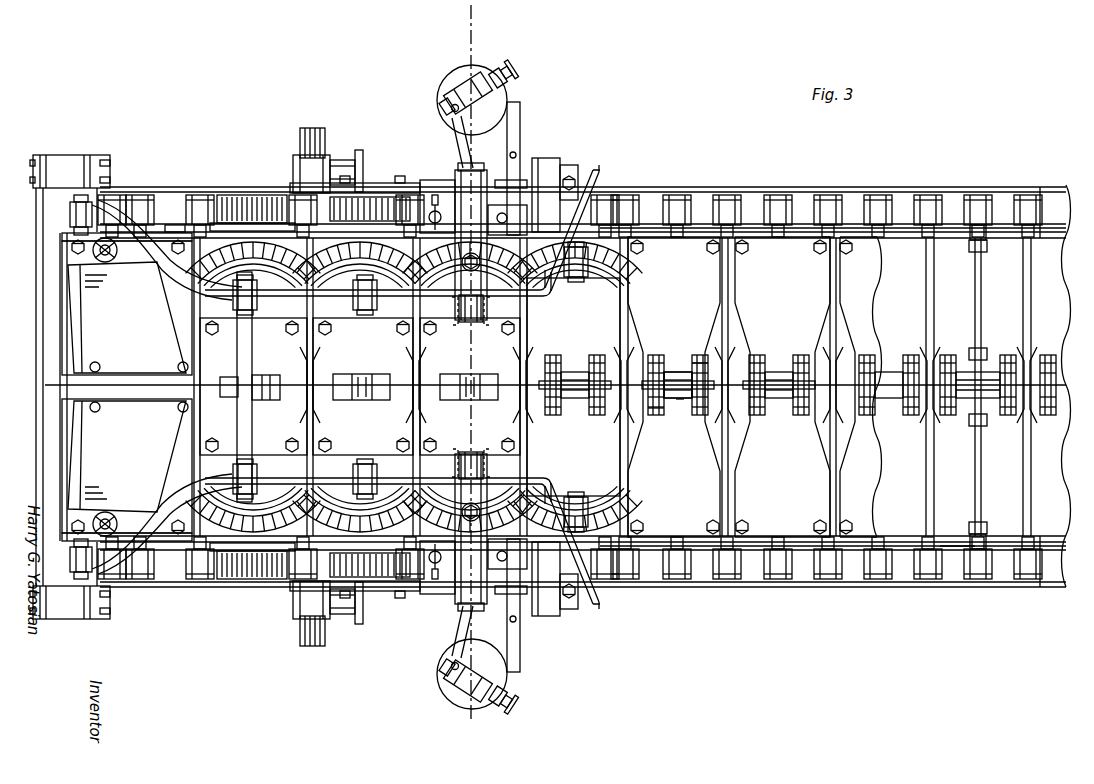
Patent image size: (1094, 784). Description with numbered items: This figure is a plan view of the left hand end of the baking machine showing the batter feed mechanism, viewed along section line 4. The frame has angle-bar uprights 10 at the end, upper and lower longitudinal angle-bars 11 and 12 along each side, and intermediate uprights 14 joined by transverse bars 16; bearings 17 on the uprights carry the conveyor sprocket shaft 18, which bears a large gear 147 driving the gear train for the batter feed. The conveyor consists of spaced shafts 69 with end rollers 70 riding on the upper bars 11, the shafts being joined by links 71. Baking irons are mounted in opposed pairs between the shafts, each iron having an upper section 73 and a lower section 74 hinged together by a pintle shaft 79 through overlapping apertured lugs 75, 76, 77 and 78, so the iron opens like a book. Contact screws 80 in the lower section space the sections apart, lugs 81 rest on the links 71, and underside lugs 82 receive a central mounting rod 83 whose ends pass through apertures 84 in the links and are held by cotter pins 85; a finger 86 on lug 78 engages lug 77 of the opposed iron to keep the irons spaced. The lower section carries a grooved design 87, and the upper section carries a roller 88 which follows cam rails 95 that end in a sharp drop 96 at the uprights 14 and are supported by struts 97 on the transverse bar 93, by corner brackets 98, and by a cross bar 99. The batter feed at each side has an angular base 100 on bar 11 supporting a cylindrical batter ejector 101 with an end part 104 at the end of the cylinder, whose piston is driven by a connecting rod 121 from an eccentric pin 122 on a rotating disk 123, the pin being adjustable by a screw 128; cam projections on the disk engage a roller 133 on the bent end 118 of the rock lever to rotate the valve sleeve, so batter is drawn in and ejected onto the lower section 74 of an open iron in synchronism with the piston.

The section line 4 is at (467, 16).
The angle-bar upright 10 is at (360, 165).
The upper horizontal angle-bar 11 is at (851, 200).
The lower horizontal angle-bar 12 is at (1002, 200).
The intermediate upright 14 is at (570, 165).
The transverse bar 16 is at (545, 158).
The bearing 17 is at (293, 160).
The conveyor sprocket shaft 18 is at (312, 127).
The shaft 69 is at (828, 346).
The roller 70 is at (150, 200).
The link 71 is at (786, 222).
The upper section 73 is at (496, 387).
The lower section 74 is at (180, 303).
The apertured lug 75 is at (652, 357).
The apertured lug 76 is at (701, 358).
The apertured lug 77 is at (676, 372).
The apertured lug 78 is at (696, 357).
The pintle shaft 79 is at (685, 420).
The contact screw 80 is at (813, 247).
The projecting lug 81 is at (175, 226).
The apertured lug 82 is at (987, 246).
The central mounting rod 83 is at (982, 308).
The aperture 84 is at (968, 548).
The cotter pin 85 is at (972, 230).
The projecting finger 86 is at (656, 418).
The grooved design 87 is at (256, 528).
The roller 88 is at (70, 212).
The transverse bar 93 is at (38, 372).
The cam rail 95 is at (338, 300).
The sharp drop 96 is at (552, 294).
The strut 97 is at (80, 164).
The corner bracket 98 is at (581, 389).
The cross bar 99 is at (250, 355).
The angular base 100 is at (424, 180).
The cylindrical batter ejector 101 is at (455, 185).
The cap 104 is at (462, 290).
The bent end 118 is at (522, 136).
The connecting rod 121 is at (473, 387).
The eccentric pin 122 is at (448, 110).
The disk 123 is at (460, 85).
The screw 128 is at (512, 78).
The roller 133 is at (520, 120).
The large gear 147 is at (246, 195).